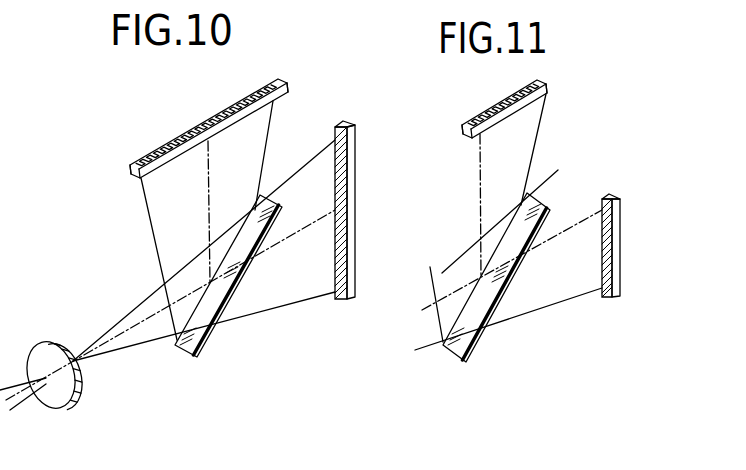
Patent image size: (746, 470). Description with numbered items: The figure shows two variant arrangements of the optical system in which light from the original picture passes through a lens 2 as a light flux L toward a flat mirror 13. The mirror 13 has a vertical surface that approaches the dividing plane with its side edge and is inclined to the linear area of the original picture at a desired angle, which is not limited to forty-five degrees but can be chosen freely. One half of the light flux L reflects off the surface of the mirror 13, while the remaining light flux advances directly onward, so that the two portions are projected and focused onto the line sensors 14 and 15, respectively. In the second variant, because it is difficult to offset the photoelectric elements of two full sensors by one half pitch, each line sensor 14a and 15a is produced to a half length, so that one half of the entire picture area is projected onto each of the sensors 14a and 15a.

In FIG. 10, the lens 2 is at (67, 407).
In FIG. 10, the mirror 13 is at (199, 353).
In FIG. 11, the mirror 13 is at (470, 355).
In FIG. 10, the line sensor 14 is at (216, 118).
In FIG. 11, the line sensor 14a is at (473, 118).
In FIG. 10, the line sensor 15 is at (355, 237).
In FIG. 11, the line sensor 15a is at (620, 238).
In FIG. 10, the light beam L is at (108, 346).